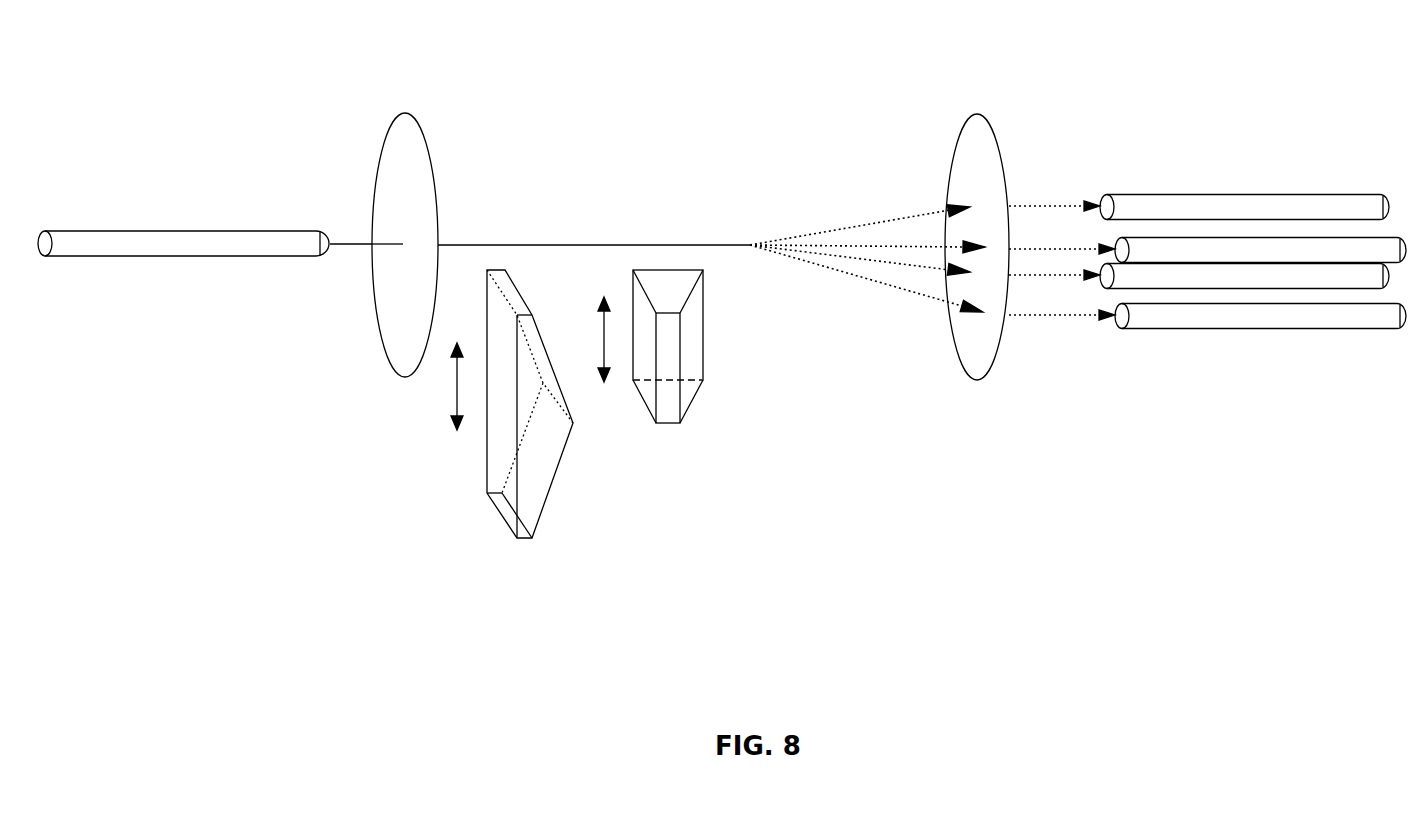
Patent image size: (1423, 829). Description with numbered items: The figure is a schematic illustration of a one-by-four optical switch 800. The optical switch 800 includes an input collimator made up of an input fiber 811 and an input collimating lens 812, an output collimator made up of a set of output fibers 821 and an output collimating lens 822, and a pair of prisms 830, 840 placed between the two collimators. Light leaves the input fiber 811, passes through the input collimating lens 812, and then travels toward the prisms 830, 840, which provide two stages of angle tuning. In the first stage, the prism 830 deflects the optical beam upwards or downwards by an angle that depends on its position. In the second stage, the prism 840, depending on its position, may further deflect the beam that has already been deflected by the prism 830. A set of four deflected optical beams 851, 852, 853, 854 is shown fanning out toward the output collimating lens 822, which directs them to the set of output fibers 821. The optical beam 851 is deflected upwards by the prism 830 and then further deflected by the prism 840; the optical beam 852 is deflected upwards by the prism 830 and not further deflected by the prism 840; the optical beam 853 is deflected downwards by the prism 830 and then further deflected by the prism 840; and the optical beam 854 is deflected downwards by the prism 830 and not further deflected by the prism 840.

The optical switch 800 is at (1048, 590).
The input fiber 811 is at (240, 232).
The input collimating lens 812 is at (390, 122).
The output fibers 821 is at (1163, 172).
The output collimating lens 822 is at (978, 113).
The prism 830 is at (502, 518).
The prism 840 is at (657, 423).
The optical beam 851 is at (805, 235).
The optical beam 852 is at (872, 248).
The optical beam 853 is at (840, 257).
The optical beam 854 is at (872, 282).